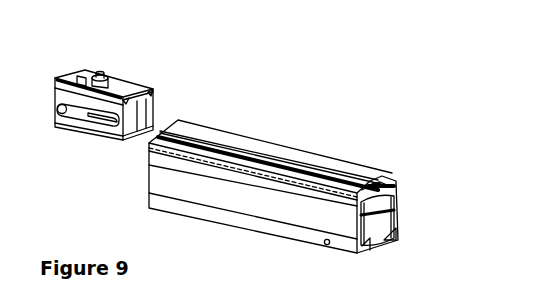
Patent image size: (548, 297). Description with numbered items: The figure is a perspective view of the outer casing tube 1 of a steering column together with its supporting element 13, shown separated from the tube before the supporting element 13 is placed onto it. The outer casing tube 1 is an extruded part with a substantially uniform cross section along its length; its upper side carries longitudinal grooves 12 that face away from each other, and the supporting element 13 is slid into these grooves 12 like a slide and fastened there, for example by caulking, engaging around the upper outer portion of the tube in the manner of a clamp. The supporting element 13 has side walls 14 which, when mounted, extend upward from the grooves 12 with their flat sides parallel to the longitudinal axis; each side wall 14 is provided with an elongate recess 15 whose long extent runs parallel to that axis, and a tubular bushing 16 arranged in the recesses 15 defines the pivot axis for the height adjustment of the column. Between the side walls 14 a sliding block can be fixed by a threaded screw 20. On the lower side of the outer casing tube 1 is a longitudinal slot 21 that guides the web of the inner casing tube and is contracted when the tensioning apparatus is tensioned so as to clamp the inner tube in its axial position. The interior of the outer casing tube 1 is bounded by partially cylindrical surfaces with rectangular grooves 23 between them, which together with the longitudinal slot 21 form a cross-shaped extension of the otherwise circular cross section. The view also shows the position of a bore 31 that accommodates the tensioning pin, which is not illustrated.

The outer casing tube 1 is at (262, 222).
The longitudinal grooves 12 is at (396, 184).
The supporting element 13 is at (147, 70).
The side walls 14 is at (120, 128).
The elongate recess 15 is at (100, 122).
The tubular bushing 16 is at (72, 128).
The threaded screw 20 is at (107, 76).
The longitudinal slot 21 is at (397, 242).
The rectangular grooves 23 is at (388, 207).
The bore 31 is at (325, 245).